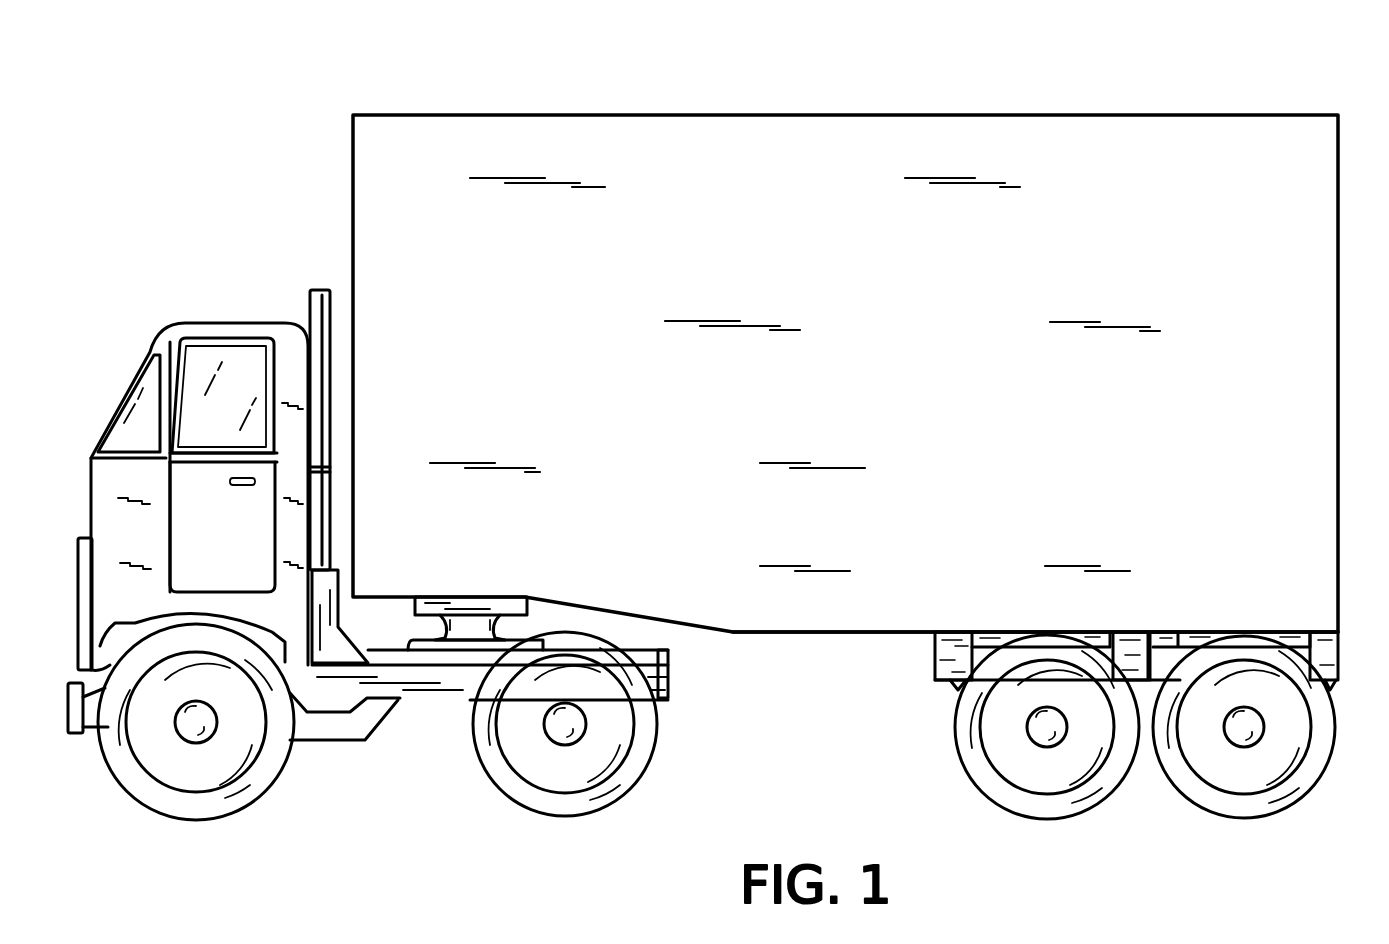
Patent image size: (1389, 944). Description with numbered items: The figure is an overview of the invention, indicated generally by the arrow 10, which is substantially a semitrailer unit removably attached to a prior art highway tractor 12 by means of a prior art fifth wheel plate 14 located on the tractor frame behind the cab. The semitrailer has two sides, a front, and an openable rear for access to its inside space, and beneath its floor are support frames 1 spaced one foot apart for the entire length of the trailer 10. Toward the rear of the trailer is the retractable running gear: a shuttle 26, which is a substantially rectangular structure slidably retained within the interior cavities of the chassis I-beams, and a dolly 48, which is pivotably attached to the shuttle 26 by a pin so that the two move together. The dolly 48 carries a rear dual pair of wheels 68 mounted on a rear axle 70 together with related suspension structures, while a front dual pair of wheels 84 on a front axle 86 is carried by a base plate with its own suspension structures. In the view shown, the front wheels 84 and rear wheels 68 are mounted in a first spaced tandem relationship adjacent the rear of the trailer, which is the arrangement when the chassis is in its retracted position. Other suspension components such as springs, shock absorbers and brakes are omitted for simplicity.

The semitrailer unit 10 is at (912, 92).
The support frames 1 is at (826, 634).
The highway tractor 12 is at (190, 330).
The fifth wheel plate 14 is at (484, 597).
The shuttle 26 is at (940, 657).
The dolly 48 is at (1338, 662).
The rear dual pair of wheels 68 is at (1318, 775).
The rear axle 70 is at (1240, 736).
The front dual pair of wheels 84 is at (993, 787).
The front axle 86 is at (1043, 736).